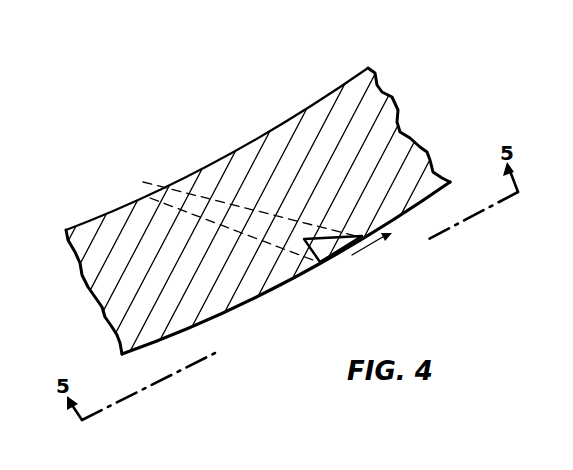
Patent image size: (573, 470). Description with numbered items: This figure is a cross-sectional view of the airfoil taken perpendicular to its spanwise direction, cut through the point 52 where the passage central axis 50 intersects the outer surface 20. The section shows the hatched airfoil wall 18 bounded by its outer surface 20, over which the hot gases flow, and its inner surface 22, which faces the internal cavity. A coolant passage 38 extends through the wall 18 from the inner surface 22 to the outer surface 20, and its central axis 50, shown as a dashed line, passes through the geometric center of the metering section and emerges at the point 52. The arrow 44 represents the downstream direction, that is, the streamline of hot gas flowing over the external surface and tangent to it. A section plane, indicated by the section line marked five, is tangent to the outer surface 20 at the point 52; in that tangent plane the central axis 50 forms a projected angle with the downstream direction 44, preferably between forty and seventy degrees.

The wall 18 is at (388, 115).
The outer surface 20 is at (168, 338).
The inner surface 22 is at (105, 213).
The coolant passage 38 is at (327, 252).
The arrow (downstream direction of hot gas flow) 44 is at (372, 247).
The passage central axis 50 is at (352, 277).
The point 52 is at (325, 264).